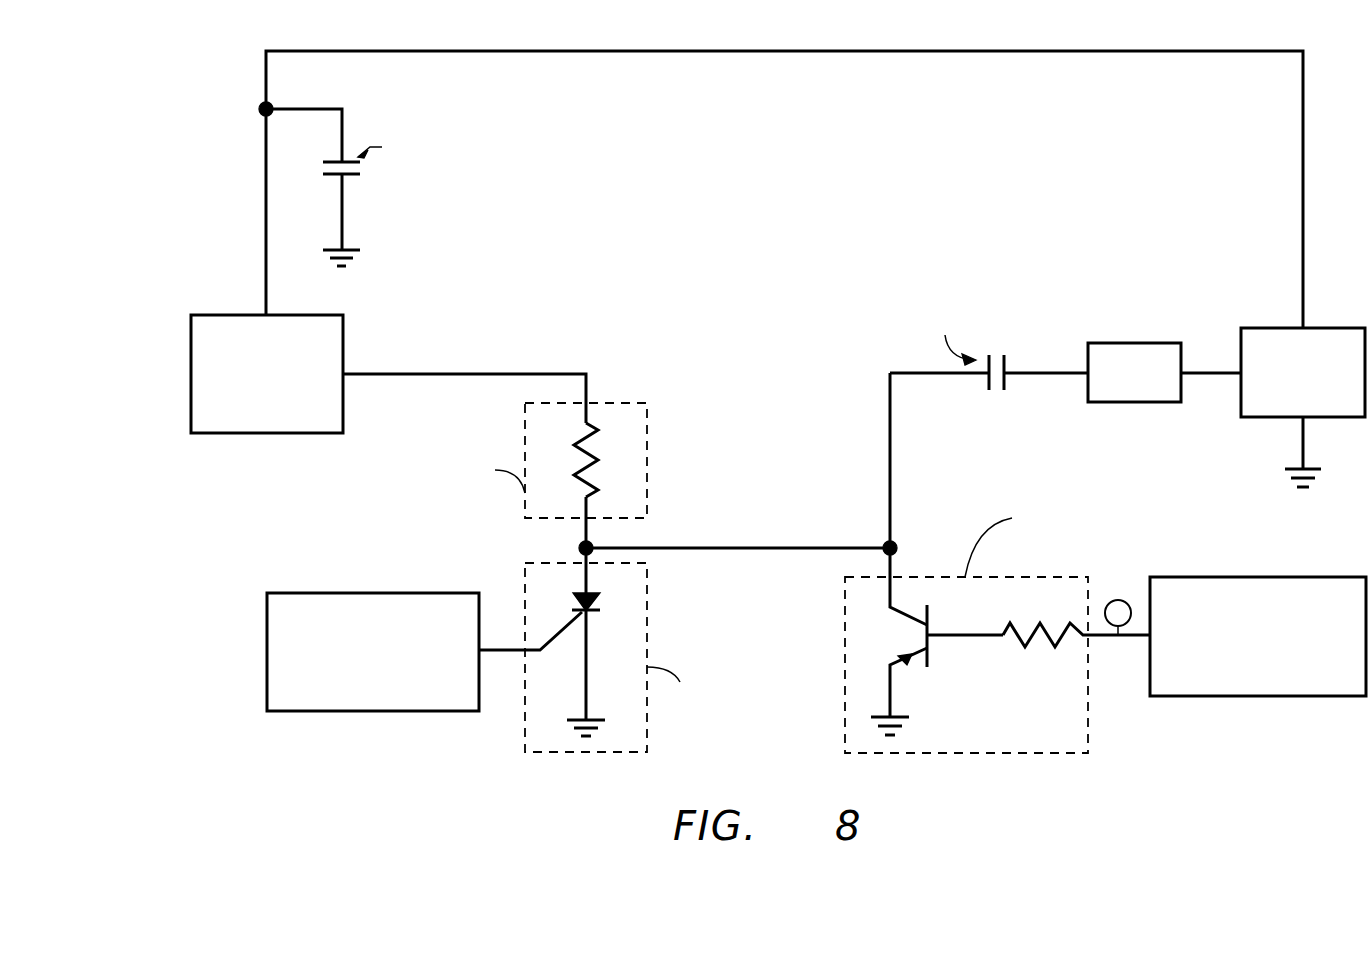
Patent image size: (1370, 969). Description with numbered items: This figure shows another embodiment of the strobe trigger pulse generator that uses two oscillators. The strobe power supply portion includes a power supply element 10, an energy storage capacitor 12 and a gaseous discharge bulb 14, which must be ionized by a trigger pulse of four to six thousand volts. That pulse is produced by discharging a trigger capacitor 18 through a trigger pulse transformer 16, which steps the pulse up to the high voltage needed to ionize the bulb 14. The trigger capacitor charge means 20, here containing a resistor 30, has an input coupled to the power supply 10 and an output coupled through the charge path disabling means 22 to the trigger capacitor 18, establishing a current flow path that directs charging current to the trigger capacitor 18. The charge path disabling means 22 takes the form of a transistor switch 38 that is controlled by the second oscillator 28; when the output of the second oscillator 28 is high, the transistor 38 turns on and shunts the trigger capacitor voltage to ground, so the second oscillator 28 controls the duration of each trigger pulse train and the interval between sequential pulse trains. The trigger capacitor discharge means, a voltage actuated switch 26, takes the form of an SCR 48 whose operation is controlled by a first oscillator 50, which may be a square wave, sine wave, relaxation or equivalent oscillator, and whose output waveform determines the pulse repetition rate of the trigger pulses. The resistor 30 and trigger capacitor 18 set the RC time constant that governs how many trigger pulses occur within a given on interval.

The power supply element 10 is at (228, 314).
The energy storage capacitor 12 is at (336, 160).
The bulb 14 is at (1278, 328).
The trigger pulse transformer 16 is at (1155, 343).
The trigger capacitor 18 is at (1010, 361).
The trigger capacitor charge means 20 is at (553, 401).
The charge path disabling means 22 is at (940, 577).
The voltage actuated switch 26 is at (552, 563).
The second oscillator 28 is at (1293, 577).
The resistor 30 is at (575, 465).
The transistor switch 38 is at (930, 625).
The SCR 48 is at (580, 593).
The first oscillator 50 is at (378, 592).